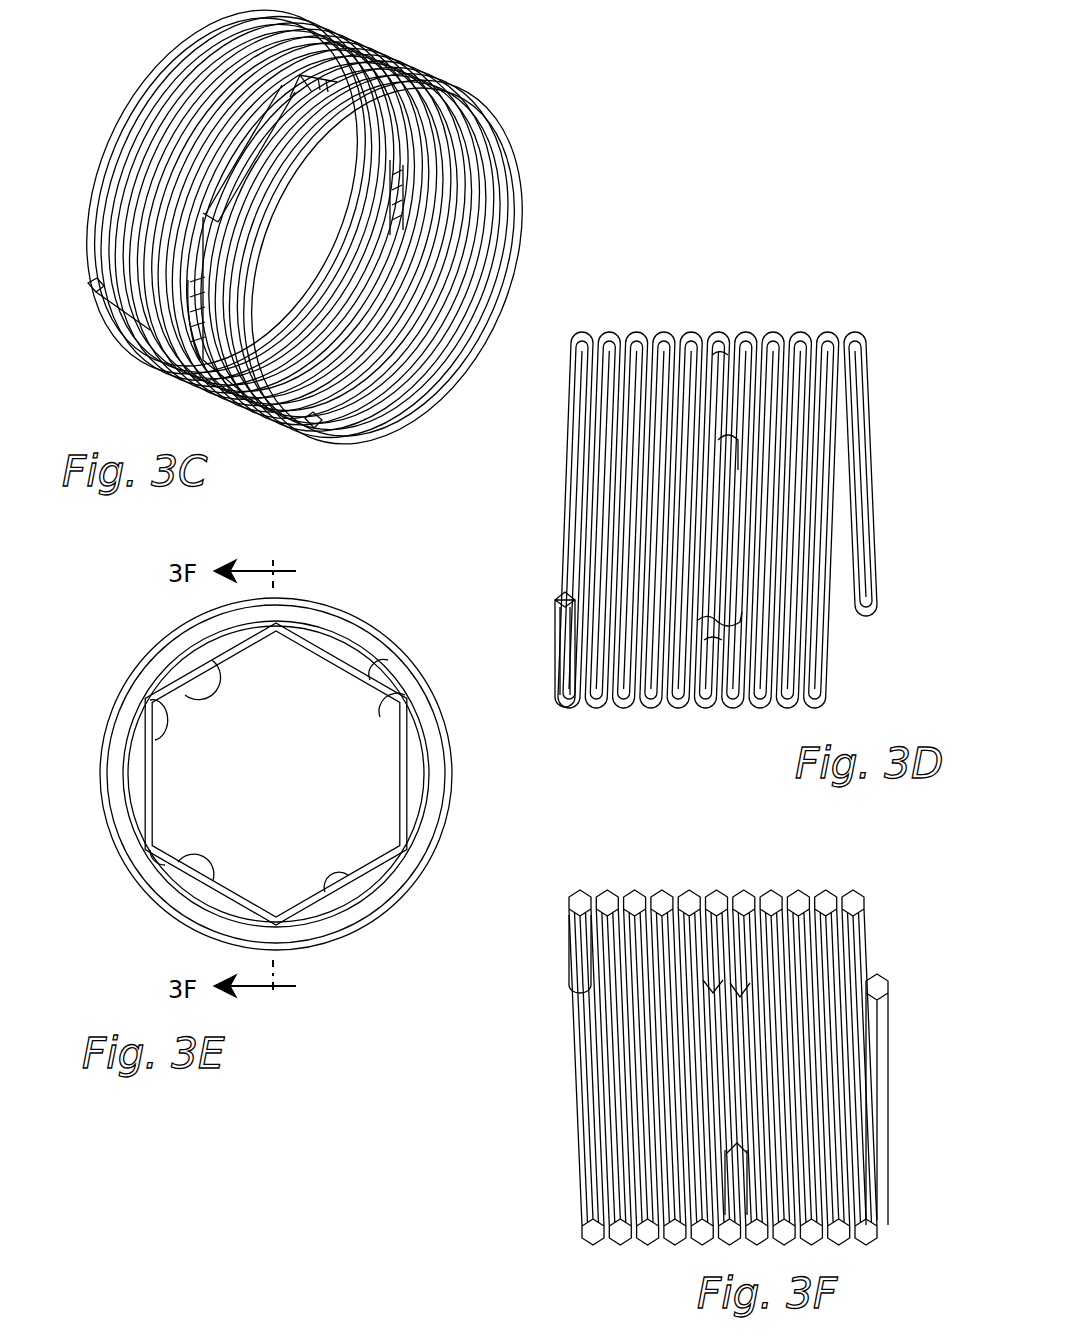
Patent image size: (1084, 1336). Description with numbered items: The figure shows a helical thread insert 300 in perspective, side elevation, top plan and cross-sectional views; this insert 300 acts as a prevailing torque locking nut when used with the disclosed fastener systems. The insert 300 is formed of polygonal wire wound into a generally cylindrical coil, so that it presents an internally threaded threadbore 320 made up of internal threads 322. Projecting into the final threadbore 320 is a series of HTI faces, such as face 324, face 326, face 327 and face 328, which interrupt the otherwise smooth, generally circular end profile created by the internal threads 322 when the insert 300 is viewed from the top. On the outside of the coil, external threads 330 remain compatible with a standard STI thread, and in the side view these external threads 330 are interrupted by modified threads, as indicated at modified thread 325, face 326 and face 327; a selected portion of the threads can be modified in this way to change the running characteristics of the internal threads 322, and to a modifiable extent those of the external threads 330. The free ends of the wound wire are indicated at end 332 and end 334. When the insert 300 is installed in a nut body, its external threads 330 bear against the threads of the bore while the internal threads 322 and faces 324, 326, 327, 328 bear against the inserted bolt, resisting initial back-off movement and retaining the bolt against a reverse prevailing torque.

In FIG. 3C, the insert 300 is at (500, 92).
In FIG. 3D, the insert 300 is at (810, 300).
In FIG. 3E, the insert 300 is at (355, 585).
In FIG. 3F, the insert 300 is at (808, 862).
In FIG. 3C, the threadbore 320 is at (534, 220).
In FIG. 3D, the threadbore 320 is at (552, 501).
In FIG. 3E, the threadbore 320 is at (366, 787).
In FIG. 3C, the threads 322 is at (470, 172).
In FIG. 3E, the threads 322 is at (385, 672).
In FIG. 3F, the threads 322 is at (623, 1050).
In FIG. 3E, the HTI face 324 is at (390, 716).
In FIG. 3C, the modified thread 325 is at (203, 253).
In FIG. 3D, the modified thread 325 is at (721, 670).
In FIG. 3E, the modified thread 325 is at (200, 690).
In FIG. 3F, the modified thread 325 is at (735, 968).
In FIG. 3C, the HTI prevailing torque face 326 is at (262, 135).
In FIG. 3D, the HTI prevailing torque face 326 is at (726, 466).
In FIG. 3E, the HTI prevailing torque face 326 is at (152, 705).
In FIG. 3F, the HTI prevailing torque face 326 is at (725, 1118).
In FIG. 3C, the HTI prevailing torque face 327 is at (314, 90).
In FIG. 3D, the HTI prevailing torque face 327 is at (720, 356).
In FIG. 3E, the HTI prevailing torque face 327 is at (198, 857).
In FIG. 3F, the HTI prevailing torque face 327 is at (725, 1192).
In FIG. 3E, the HTI prevailing torque face 328 is at (340, 875).
In FIG. 3C, the external threads 330 is at (103, 130).
In FIG. 3D, the external threads 330 is at (636, 333).
In FIG. 3E, the external threads 330 is at (452, 851).
In FIG. 3F, the external threads 330 is at (540, 1220).
In FIG. 3C, the first end of coil 332 is at (316, 428).
In FIG. 3D, the first end of coil 332 is at (870, 608).
In FIG. 3E, the first end of coil 332 is at (152, 862).
In FIG. 3C, the second end of coil 334 is at (95, 287).
In FIG. 3D, the second end of coil 334 is at (560, 598).
In FIG. 3F, the second end of coil 334 is at (878, 986).